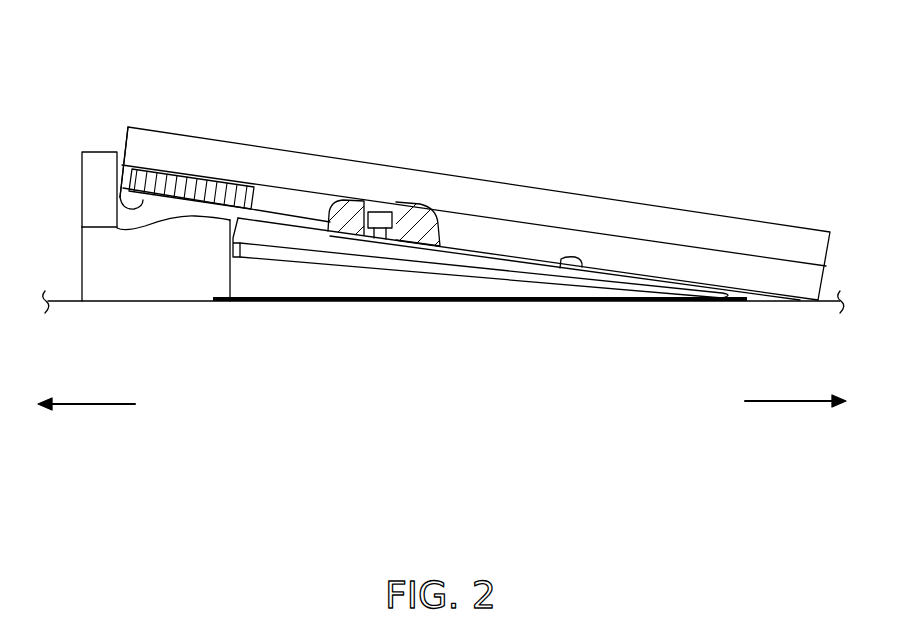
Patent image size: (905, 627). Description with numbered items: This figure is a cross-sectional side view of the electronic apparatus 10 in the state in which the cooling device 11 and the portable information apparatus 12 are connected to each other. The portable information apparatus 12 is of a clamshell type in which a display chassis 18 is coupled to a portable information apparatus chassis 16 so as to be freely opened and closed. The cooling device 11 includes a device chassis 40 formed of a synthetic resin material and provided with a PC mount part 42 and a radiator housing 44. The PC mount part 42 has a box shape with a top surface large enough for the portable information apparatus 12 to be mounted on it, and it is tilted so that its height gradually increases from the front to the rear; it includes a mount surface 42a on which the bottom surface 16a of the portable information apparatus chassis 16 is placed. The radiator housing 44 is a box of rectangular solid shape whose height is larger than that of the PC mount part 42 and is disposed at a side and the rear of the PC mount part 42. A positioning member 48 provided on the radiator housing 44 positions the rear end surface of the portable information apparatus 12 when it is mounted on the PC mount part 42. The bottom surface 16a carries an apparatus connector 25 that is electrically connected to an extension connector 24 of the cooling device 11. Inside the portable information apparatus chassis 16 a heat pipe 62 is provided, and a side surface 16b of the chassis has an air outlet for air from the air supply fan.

The electronic apparatus 10 is at (453, 38).
The cooling device 11 is at (72, 244).
The portable information apparatus 12 is at (578, 163).
The portable information apparatus chassis 16 is at (597, 247).
The bottom surface 16a is at (123, 160).
The side surface 16b is at (282, 197).
The display chassis 18 is at (655, 213).
The extension connector 24 is at (380, 242).
The apparatus connector 25 is at (378, 210).
The device chassis 40 is at (307, 291).
The PC mount part 42 is at (340, 293).
The mount surface 42a is at (580, 269).
The radiator housing 44 is at (147, 293).
The positioning member 48 is at (84, 187).
The heat pipe 62 is at (212, 183).